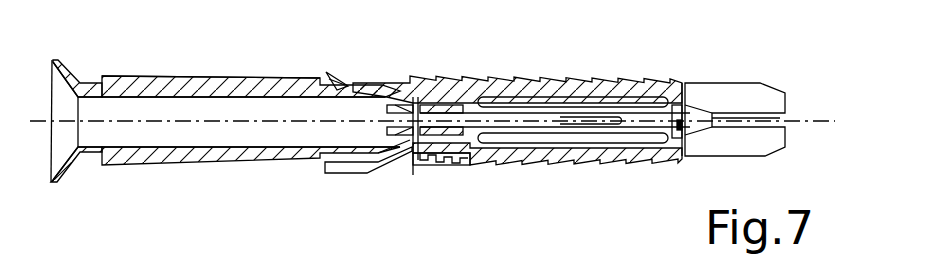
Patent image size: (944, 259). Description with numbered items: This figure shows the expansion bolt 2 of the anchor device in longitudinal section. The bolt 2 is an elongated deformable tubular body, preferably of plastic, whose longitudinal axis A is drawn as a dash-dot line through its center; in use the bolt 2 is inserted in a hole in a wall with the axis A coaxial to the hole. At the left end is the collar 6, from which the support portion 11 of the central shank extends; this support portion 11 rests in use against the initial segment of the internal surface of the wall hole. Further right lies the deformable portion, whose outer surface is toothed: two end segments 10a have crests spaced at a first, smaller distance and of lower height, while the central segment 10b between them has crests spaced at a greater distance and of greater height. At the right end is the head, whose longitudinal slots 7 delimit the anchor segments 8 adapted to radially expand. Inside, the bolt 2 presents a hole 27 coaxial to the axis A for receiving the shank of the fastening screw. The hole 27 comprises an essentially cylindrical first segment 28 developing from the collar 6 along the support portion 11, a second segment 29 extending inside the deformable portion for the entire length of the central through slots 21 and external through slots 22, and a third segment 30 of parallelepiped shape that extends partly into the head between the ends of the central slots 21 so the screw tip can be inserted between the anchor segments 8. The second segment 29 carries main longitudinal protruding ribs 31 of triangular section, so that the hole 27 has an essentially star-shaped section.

The expansion bolt 2 is at (206, 69).
The collar 6 is at (68, 70).
The longitudinal slots 7 is at (763, 114).
The anchor segments 8 is at (733, 79).
The end segments 10a is at (450, 77).
The central segment 10b is at (565, 76).
The support portion 11 is at (253, 74).
The central rectilinear through slots 21 is at (537, 127).
The external rectilinear through slots 22 is at (596, 99).
The hole 27 is at (92, 98).
The first segment 28 is at (199, 144).
The second segment 29 is at (460, 124).
The third segment 30 is at (689, 133).
The main longitudinal protruding ribs 31 is at (393, 102).
The longitudinal axis A is at (797, 120).